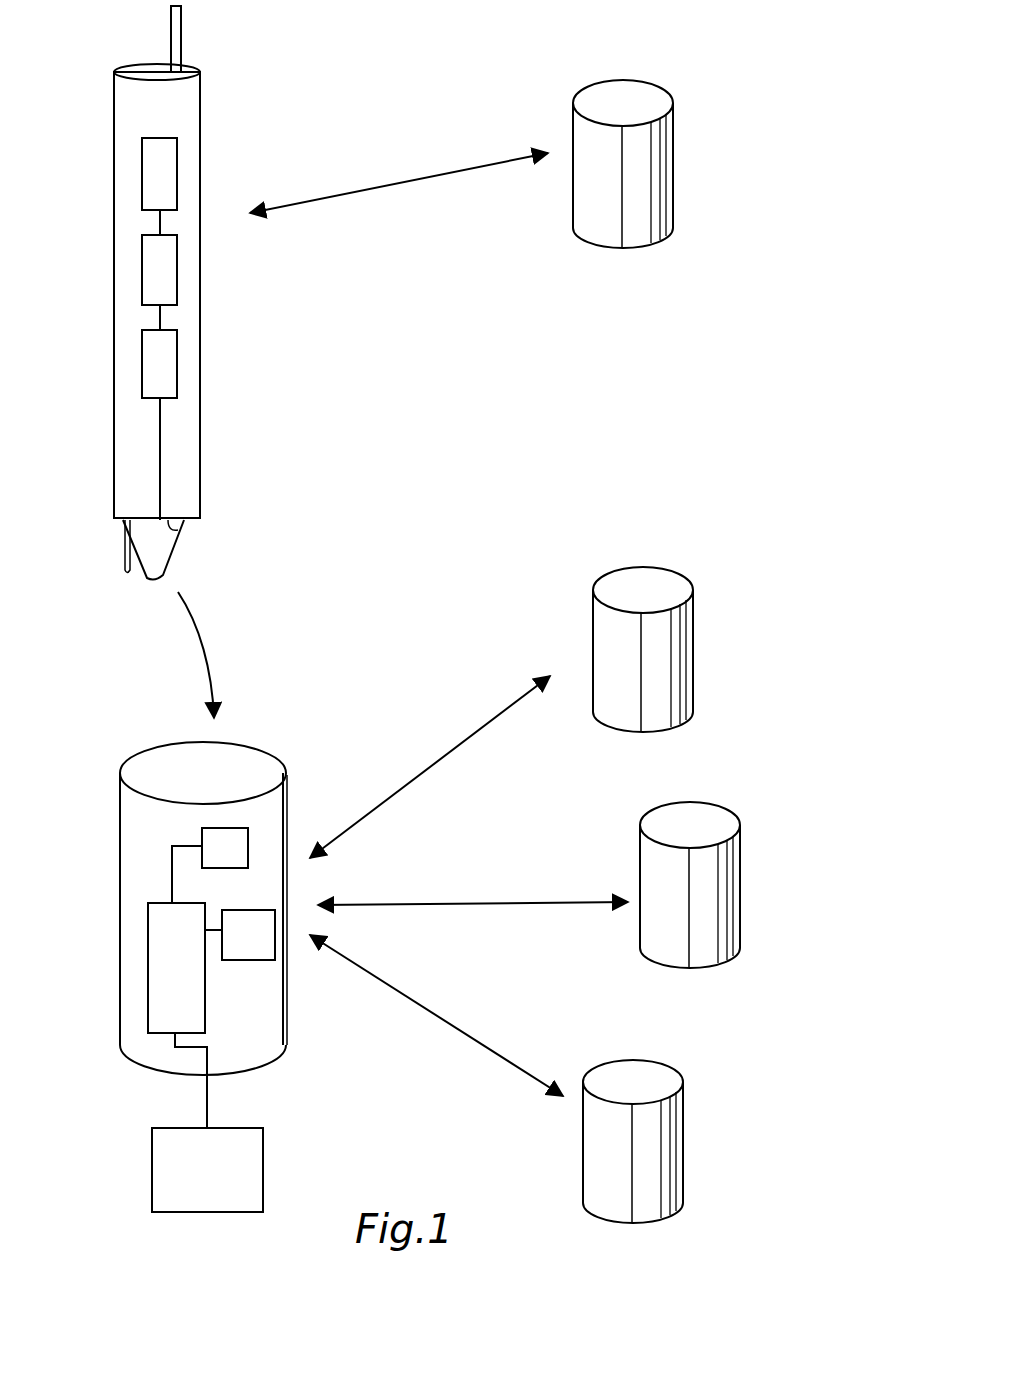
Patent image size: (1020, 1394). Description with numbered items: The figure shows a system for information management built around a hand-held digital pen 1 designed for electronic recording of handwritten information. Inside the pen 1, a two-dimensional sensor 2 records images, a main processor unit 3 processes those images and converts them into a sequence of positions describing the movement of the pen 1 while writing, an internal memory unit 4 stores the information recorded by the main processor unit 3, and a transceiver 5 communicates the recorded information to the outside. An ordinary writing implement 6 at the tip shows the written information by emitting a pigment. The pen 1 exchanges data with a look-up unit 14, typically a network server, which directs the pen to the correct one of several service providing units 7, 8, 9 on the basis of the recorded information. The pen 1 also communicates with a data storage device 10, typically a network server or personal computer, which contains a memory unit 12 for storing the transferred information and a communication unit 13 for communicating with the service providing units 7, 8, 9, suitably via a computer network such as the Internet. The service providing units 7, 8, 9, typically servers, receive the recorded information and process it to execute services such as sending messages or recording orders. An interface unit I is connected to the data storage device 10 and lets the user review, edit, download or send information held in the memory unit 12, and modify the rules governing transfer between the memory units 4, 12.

The digital pen 1 is at (178, 123).
The two-dimensional sensor 2 is at (176, 533).
The main processor unit 3 is at (155, 372).
The internal memory unit 4 is at (168, 285).
The transceiver 5 is at (172, 185).
The writing implement 6 is at (125, 558).
The service providing unit 7 is at (665, 670).
The service providing unit 8 is at (720, 898).
The service providing unit 9 is at (672, 1160).
The data storage device 10 is at (288, 824).
The memory unit 12 is at (168, 1022).
The communication unit 13 is at (262, 947).
The look-up unit 14 is at (238, 852).
The interface unit I is at (248, 1162).